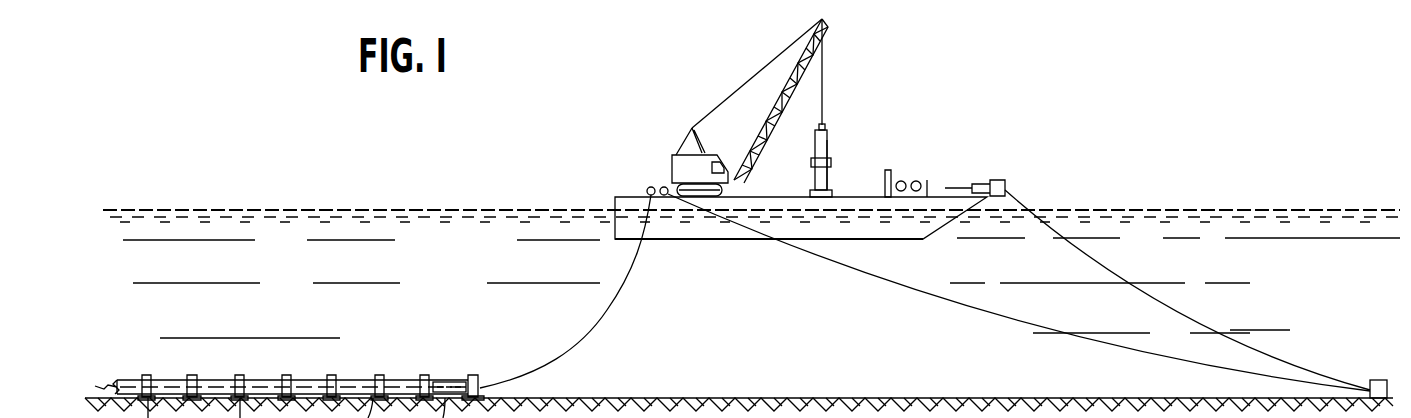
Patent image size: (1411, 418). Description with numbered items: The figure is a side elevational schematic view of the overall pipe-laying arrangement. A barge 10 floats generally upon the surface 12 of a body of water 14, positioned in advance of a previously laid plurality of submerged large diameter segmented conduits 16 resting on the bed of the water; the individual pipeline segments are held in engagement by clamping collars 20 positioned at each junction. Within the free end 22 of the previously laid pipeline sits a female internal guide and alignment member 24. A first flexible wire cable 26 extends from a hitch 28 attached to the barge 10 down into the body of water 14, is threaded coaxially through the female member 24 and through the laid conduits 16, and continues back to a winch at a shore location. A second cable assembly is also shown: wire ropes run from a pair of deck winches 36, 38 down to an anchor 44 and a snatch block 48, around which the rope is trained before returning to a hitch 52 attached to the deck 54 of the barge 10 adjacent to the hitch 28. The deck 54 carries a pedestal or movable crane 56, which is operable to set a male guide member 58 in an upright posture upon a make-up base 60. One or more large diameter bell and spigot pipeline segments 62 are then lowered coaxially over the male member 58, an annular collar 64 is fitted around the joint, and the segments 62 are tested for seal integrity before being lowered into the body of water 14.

The barge 10 is at (787, 167).
The surface 12 is at (532, 210).
The body of water 14 is at (525, 276).
The segmented conduits 16 is at (173, 381).
The clamping collars 20 is at (147, 376).
The free end 22 is at (480, 377).
The female internal guide and alignment member 24 is at (450, 383).
The first flexible wire cable 26 is at (614, 293).
The hitch 28 is at (648, 189).
The deck winch 36 is at (905, 181).
The deck winch 38 is at (920, 181).
The anchor 44 is at (1382, 380).
The snatch block 48 is at (1368, 387).
The hitch 52 is at (667, 187).
The deck 54 is at (617, 197).
The crane 56 is at (718, 104).
The male guide member 58 is at (830, 122).
The make-up base 60 is at (832, 193).
The pipeline segments 62 is at (815, 176).
The annular collar 64 is at (829, 166).